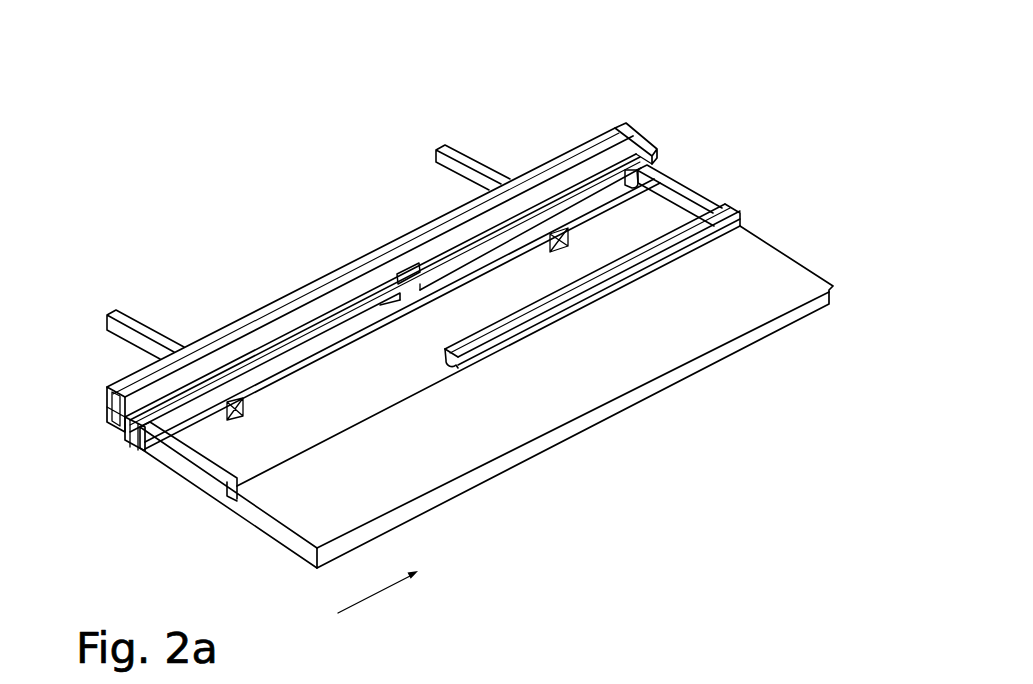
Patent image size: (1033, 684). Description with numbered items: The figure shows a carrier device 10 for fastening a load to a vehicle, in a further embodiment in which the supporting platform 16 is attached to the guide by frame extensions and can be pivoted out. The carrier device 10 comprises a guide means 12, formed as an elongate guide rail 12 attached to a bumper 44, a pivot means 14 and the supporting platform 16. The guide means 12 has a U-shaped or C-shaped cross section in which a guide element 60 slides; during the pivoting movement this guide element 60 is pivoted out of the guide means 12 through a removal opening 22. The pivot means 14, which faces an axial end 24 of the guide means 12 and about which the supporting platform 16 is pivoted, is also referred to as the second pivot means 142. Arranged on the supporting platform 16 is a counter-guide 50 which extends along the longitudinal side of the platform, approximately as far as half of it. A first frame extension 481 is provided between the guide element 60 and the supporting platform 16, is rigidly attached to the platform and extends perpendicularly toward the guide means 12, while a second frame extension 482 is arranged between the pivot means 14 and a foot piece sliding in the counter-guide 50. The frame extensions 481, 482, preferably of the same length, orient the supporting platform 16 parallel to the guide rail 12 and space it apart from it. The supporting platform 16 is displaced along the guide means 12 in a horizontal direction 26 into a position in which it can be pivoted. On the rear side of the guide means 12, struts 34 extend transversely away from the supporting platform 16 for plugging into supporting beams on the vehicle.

The carrier device 10 is at (214, 127).
The guide means 12 is at (341, 289).
The pivot means 14 is at (662, 116).
The second pivot means 142 is at (636, 186).
The supporting platform 16 is at (630, 370).
The removal opening 22 is at (402, 272).
The axial end 24 is at (640, 143).
The horizontal direction 26 is at (374, 590).
The strut 34 is at (110, 308).
The bumper 44 is at (257, 317).
The counter-guide 50 is at (663, 265).
The guide element 60 is at (118, 420).
The first frame extension 481 is at (205, 459).
The second frame extension 482 is at (683, 192).